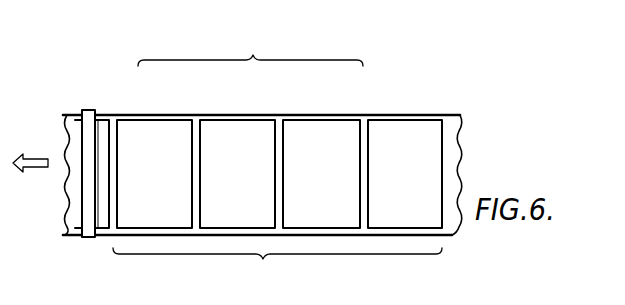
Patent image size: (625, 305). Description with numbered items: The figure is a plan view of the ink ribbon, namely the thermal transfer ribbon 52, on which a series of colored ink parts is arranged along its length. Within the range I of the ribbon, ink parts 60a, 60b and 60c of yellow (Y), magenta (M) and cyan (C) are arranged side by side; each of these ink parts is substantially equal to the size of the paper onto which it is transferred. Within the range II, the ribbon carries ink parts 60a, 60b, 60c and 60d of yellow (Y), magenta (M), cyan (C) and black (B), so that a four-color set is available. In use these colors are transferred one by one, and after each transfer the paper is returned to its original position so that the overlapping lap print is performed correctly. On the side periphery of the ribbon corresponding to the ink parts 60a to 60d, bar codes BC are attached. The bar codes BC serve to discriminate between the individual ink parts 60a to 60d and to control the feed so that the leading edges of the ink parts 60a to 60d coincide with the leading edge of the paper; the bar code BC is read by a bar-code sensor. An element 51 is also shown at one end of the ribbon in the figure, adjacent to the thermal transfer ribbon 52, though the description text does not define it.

The guide bar / cutting blade 51 is at (85, 240).
The thermal transfer ribbon 52 is at (381, 96).
The ink part of yellow (Y) 60a is at (153, 135).
The ink part of magenta (M) 60b is at (270, 96).
The ink part of cyan (C) 60c is at (350, 96).
The ink part of black (B) 60d is at (446, 96).
The range I is at (250, 48).
The range II is at (277, 268).
The bar codes BC is at (212, 235).